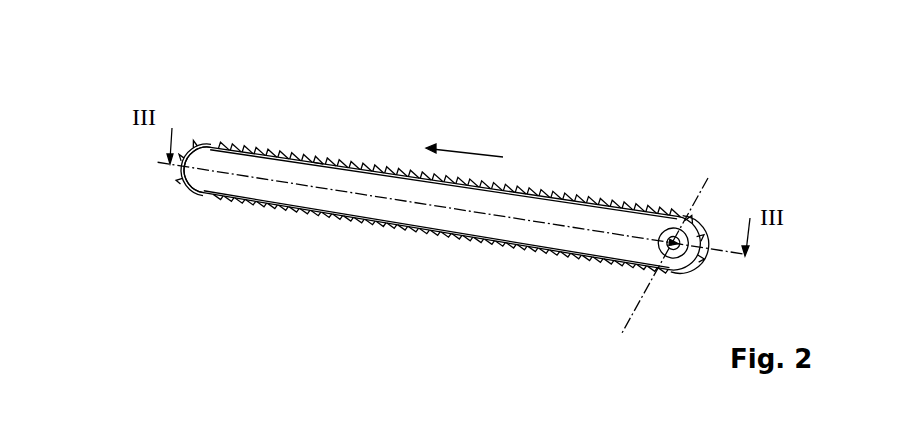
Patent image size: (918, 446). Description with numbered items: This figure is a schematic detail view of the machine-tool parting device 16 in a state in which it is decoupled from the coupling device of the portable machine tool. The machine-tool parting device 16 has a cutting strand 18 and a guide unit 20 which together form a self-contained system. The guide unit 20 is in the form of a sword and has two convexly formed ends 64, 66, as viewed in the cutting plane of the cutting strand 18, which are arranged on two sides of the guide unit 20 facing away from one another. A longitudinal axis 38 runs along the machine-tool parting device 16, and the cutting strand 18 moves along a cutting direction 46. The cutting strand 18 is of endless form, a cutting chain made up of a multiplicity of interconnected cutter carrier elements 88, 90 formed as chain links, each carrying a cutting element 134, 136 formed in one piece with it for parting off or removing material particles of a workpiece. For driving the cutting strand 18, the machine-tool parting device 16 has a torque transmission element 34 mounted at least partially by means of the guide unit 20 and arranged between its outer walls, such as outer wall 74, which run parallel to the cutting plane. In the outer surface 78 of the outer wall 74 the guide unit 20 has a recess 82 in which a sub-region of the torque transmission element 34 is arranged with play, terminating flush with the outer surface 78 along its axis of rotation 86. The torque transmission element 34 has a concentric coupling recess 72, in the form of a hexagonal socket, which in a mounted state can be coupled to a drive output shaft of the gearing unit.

The machine-tool parting device 16 is at (658, 114).
The cutting strand 18 is at (260, 145).
The guide unit 20 is at (298, 197).
The torque transmission element 34 is at (678, 262).
The longitudinal axis 38 is at (159, 168).
The cutting direction 46 is at (470, 152).
The convexly formed end 64 is at (188, 198).
The convexly formed end 66 is at (708, 275).
The coupling recess 72 is at (676, 240).
The outer wall 74 is at (578, 238).
The outer surface 78 is at (512, 230).
The recess 82 is at (688, 268).
The axis of rotation 86 is at (718, 173).
The cutter carrier element 88 is at (294, 156).
The cutter carrier element 90 is at (307, 152).
The cutting element 134 is at (301, 153).
The cutting element 136 is at (311, 152).